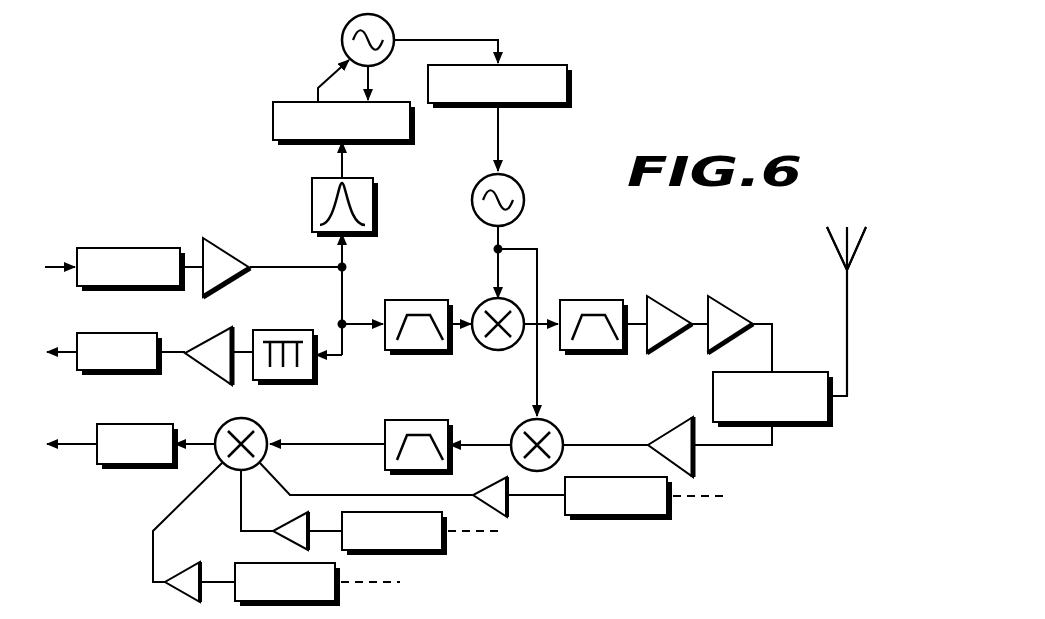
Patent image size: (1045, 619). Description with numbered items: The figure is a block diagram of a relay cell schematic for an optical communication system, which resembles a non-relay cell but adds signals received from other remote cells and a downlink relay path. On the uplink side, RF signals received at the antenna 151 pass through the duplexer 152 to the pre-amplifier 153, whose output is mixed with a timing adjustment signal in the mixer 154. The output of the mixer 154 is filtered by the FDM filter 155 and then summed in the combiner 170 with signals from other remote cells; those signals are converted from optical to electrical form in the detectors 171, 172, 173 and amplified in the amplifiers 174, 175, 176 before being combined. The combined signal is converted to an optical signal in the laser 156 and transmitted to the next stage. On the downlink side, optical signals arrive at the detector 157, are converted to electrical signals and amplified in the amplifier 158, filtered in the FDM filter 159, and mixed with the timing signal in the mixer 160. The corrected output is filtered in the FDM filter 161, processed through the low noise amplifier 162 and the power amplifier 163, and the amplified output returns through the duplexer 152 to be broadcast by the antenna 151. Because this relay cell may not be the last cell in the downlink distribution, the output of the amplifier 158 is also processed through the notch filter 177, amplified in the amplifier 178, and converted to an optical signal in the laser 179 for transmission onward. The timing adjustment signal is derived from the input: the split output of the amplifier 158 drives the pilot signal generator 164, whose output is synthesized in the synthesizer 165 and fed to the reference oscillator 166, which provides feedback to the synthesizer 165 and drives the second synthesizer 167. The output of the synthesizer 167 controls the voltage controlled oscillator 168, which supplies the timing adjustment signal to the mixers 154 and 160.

The antenna 151 is at (829, 243).
The duplexer 152 is at (713, 394).
The pre-amplifier 153 is at (667, 431).
The mixer 154 is at (558, 423).
The FDM filter 155 is at (453, 423).
The laser 156 is at (137, 465).
The detector 157 is at (132, 246).
The amplifier 158 is at (222, 284).
The FDM filter 159 is at (425, 298).
The mixer 160 is at (505, 351).
The FDM filter 161 is at (592, 300).
The low noise amplifier 162 is at (663, 307).
The power amplifier 163 is at (735, 312).
The pilot signal generator 164 is at (375, 203).
The synthesizer 165 is at (273, 120).
The reference oscillator 166 is at (343, 33).
The second synthesizer 167 is at (573, 80).
The voltage controlled oscillator 168 is at (525, 195).
The combiner 170 is at (263, 423).
The detector 171 is at (648, 522).
The detector 172 is at (425, 558).
The detector 173 is at (254, 560).
The amplifier 174 is at (505, 508).
The amplifier 175 is at (296, 518).
The amplifier 176 is at (183, 563).
The notch filter 177 is at (290, 320).
The amplifier 178 is at (204, 370).
The laser 179 is at (115, 332).